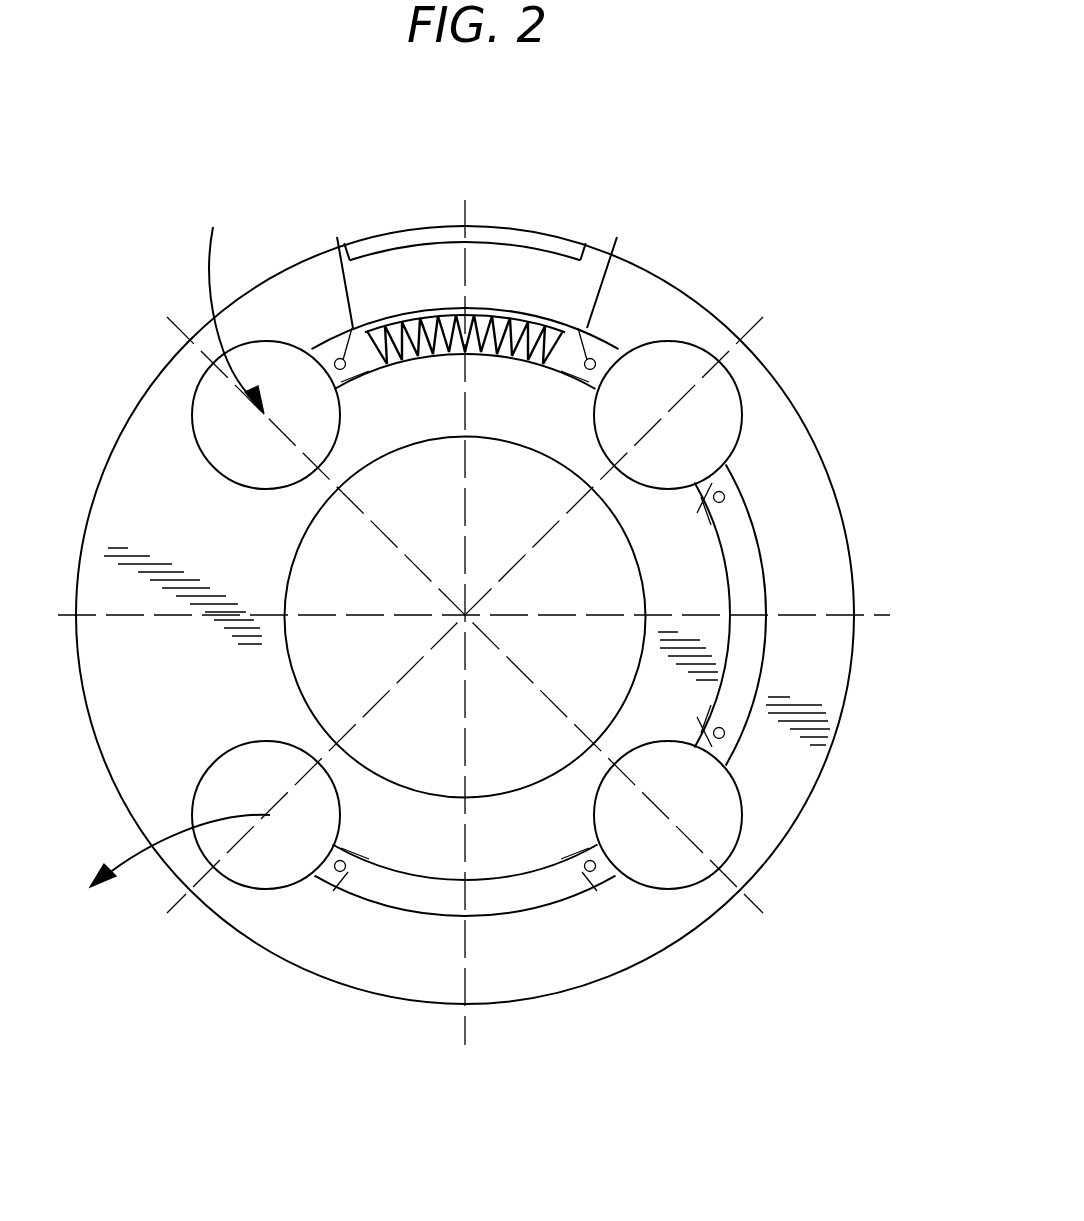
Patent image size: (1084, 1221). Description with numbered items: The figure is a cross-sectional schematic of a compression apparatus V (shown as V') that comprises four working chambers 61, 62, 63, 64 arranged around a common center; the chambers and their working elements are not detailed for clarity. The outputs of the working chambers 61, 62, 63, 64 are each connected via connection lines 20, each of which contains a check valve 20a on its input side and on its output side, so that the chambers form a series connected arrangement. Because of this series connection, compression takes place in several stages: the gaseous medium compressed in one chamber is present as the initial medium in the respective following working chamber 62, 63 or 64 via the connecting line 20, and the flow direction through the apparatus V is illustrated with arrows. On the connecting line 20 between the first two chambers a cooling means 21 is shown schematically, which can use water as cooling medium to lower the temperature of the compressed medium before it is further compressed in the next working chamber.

The working chamber 61 is at (302, 424).
The working chamber 62 is at (706, 443).
The working chamber 63 is at (660, 852).
The working chamber 64 is at (284, 800).
The connection line 20 is at (580, 342).
The check valve 20a is at (343, 358).
The cooling means 21 is at (424, 265).
The compression apparatus V is at (268, 340).